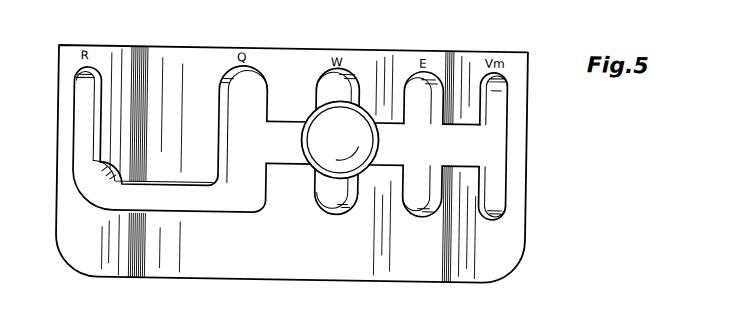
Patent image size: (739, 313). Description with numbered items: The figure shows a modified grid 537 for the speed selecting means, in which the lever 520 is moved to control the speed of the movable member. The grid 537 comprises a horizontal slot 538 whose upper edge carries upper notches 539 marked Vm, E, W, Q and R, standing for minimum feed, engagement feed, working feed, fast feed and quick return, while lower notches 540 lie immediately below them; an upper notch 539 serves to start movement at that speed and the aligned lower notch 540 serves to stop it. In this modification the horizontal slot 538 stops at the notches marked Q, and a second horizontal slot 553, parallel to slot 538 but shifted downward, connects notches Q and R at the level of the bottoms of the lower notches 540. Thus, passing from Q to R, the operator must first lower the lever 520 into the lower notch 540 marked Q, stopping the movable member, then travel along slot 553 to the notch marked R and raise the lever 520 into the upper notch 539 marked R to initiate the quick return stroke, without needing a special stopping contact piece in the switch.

The grid 537 is at (530, 205).
The horizontal slot 538 is at (293, 144).
The upper notches 539 is at (222, 80).
The lower notches 540 is at (87, 172).
The horizontal slot 553 is at (198, 198).
The lever 520 is at (352, 134).